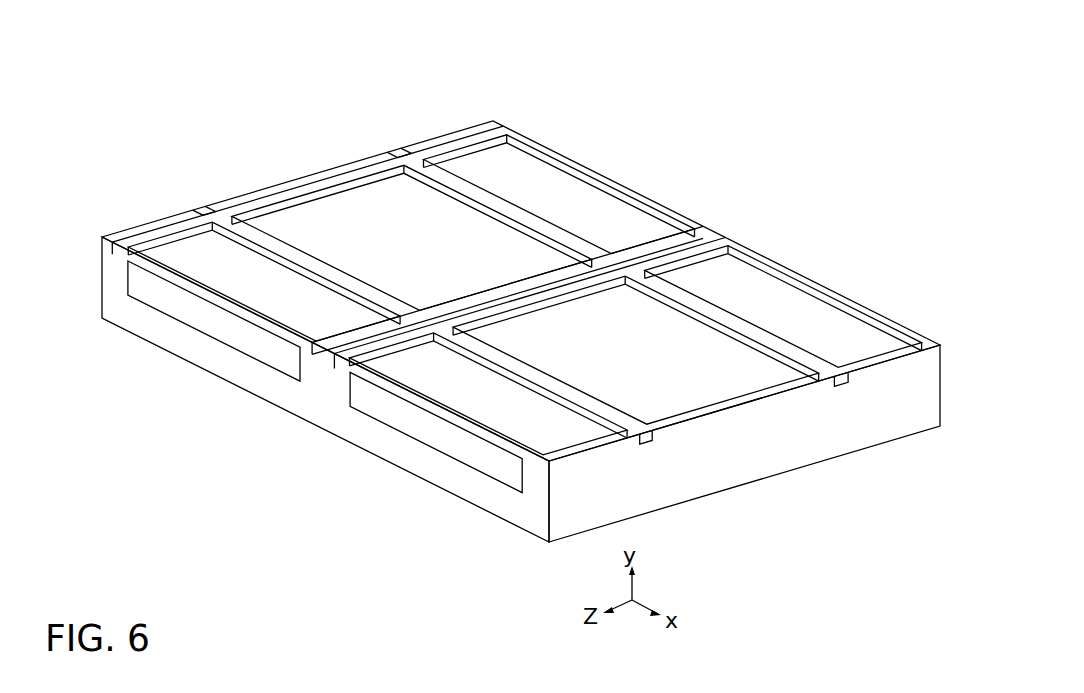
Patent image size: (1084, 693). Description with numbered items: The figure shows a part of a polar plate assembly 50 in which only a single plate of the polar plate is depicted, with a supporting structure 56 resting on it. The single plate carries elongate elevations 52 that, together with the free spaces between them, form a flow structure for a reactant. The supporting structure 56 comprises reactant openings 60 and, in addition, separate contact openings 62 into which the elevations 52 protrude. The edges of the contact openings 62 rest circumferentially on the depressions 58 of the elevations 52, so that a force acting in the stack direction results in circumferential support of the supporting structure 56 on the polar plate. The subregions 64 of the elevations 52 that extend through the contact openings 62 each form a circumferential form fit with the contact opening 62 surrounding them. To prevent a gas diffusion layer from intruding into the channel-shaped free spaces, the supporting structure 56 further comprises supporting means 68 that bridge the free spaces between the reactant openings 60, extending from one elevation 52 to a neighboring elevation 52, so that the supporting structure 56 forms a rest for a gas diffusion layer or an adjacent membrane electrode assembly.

The polar plate assembly 50 is at (851, 188).
The supporting structure 56 is at (860, 293).
The supporting means 68 is at (789, 272).
The reactant openings 60 is at (750, 295).
The contact openings 62 is at (553, 278).
The subregions of the elevations 64 is at (590, 270).
The depressions of the elevations 58 is at (122, 257).
The elevations 52 is at (115, 281).